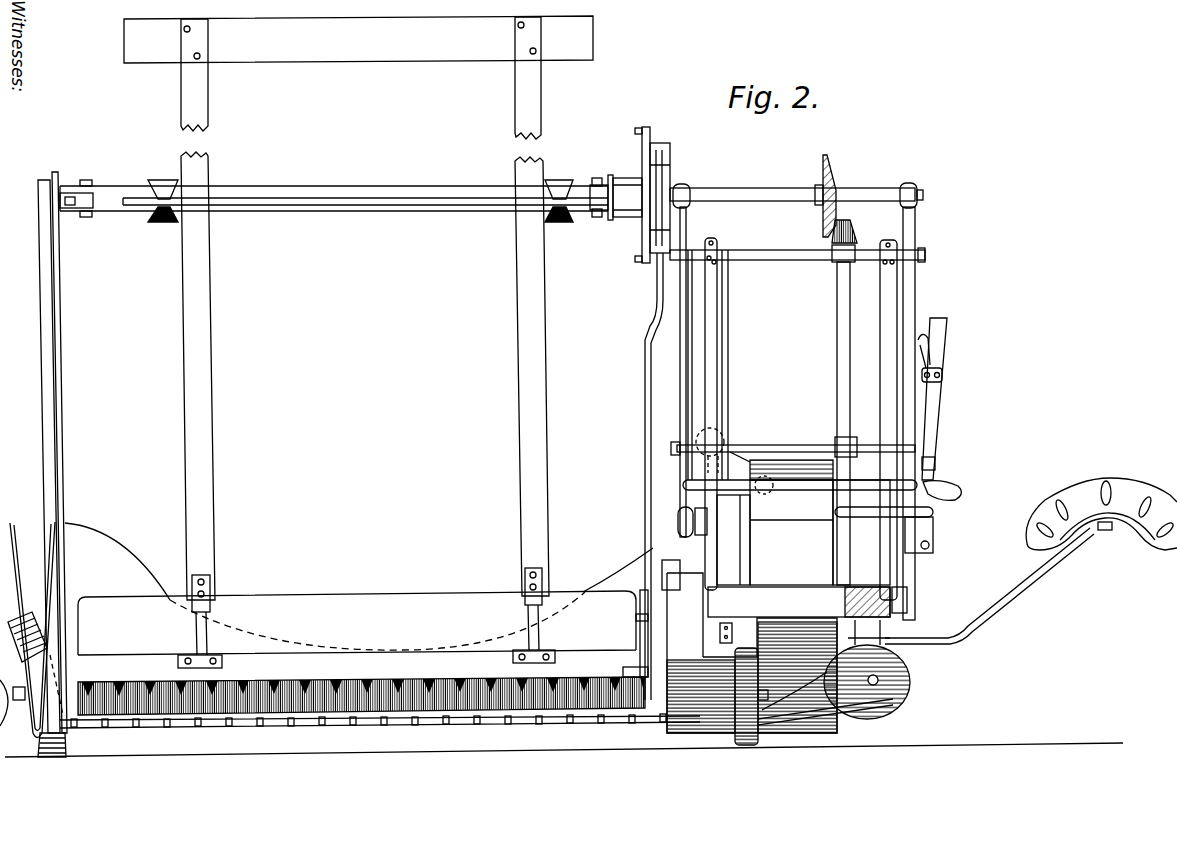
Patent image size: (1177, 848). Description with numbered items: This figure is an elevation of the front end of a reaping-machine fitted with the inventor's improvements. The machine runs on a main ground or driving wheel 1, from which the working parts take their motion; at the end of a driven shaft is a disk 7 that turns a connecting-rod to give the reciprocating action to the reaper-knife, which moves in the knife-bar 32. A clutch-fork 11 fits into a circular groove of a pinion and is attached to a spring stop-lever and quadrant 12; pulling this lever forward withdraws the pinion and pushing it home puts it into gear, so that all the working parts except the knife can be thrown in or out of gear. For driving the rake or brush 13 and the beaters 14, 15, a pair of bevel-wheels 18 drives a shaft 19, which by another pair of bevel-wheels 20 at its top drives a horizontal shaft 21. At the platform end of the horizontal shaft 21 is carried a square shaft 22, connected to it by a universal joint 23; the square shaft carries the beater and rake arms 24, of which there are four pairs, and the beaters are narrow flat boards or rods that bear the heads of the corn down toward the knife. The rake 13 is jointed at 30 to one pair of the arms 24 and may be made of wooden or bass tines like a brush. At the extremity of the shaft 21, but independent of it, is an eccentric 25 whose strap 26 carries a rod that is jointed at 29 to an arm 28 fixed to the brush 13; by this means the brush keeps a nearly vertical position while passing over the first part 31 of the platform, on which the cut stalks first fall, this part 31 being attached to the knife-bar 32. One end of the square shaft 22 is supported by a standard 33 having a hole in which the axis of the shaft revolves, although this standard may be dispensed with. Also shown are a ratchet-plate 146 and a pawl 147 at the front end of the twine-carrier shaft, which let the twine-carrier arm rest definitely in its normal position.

The main ground or driving wheel 1 is at (800, 602).
The disk 7 is at (834, 672).
The clutch-fork 11 is at (884, 513).
The spring stop-lever and quadrant 12 is at (934, 491).
The rake or brush 13 is at (380, 659).
The beater 14 is at (365, 196).
The beater 15 is at (358, 39).
The pair of bevel-wheels 18 is at (905, 490).
The shaft 19 is at (838, 423).
The pair of bevel-wheels 20 is at (836, 208).
The horizontal shaft 21 is at (796, 192).
The square shaft 22 is at (334, 195).
The universal joint 23 is at (616, 197).
The beater and rake arms 24 is at (405, 358).
The eccentric 25 is at (652, 172).
The strap 26 is at (660, 198).
The arm 28 is at (651, 618).
The joint 29 is at (630, 616).
The joint 30 is at (370, 618).
The first part of the platform 31 is at (359, 586).
The knife-bar 32 is at (331, 630).
The standard 33 is at (52, 464).
The ratchet-plate 146 is at (734, 456).
The pawl 147 is at (793, 444).